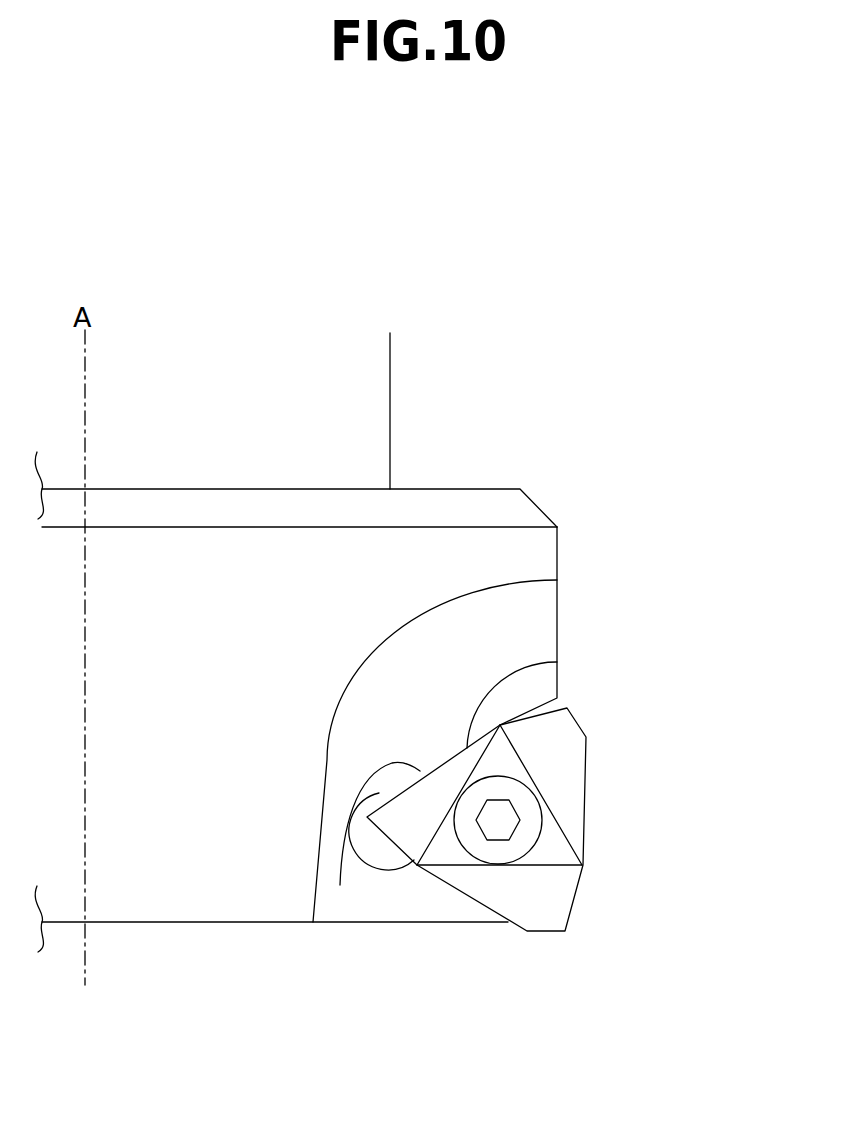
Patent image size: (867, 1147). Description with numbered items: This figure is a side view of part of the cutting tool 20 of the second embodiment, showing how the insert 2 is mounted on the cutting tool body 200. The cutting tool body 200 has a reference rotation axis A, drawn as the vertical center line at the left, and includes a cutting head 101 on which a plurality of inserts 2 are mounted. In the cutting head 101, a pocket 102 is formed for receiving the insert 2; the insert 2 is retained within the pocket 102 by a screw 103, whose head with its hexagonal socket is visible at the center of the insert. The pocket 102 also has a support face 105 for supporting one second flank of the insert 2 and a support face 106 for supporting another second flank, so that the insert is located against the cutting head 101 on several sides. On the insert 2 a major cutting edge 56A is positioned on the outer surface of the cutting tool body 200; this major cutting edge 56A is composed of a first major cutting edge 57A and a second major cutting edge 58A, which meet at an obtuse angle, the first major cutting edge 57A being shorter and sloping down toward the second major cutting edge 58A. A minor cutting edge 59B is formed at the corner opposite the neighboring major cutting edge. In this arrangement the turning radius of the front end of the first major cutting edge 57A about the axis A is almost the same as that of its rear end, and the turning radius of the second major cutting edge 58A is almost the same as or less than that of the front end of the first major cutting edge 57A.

The cutting tool 20 is at (585, 312).
The cutting tool body 200 is at (363, 408).
The cutting head 101 is at (523, 548).
The pocket 102 is at (340, 885).
The screw 103 is at (500, 823).
The support face 105 is at (557, 662).
The support face 106 is at (452, 893).
The major cutting edge 56A is at (720, 805).
The first major cutting edge 57A is at (578, 883).
The second major cutting edge 58A is at (585, 813).
The minor cutting edge 59B is at (578, 720).
The insert 2 is at (547, 902).